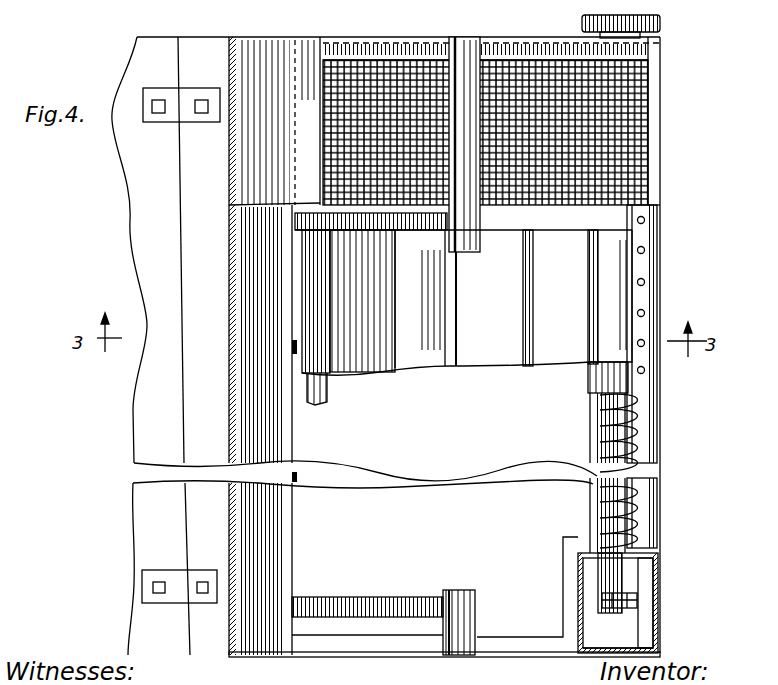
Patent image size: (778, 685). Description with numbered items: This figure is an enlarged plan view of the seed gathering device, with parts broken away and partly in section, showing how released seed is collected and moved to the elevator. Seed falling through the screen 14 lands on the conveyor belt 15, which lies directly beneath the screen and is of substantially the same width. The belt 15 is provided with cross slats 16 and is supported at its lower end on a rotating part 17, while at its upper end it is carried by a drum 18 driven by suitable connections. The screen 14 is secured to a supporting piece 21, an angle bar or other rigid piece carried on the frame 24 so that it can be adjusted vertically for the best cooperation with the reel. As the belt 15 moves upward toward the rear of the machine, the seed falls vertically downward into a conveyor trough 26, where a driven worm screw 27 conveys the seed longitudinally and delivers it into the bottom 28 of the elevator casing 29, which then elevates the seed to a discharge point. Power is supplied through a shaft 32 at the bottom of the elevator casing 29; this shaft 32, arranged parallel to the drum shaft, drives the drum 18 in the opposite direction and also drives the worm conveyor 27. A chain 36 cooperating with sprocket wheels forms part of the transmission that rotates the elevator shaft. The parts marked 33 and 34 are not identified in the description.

The screen 14 is at (323, 127).
The conveyor belt 15 is at (485, 352).
The cross slats 16 is at (381, 293).
The rotating part 17 is at (323, 392).
The drum 18 is at (593, 387).
The supporting piece 21 is at (472, 251).
The frame 24 is at (503, 648).
The conveyor trough 26 is at (648, 290).
The worm screw 27 is at (600, 497).
The bottom of the elevator casing 28 is at (637, 635).
The elevator casing 29 is at (578, 578).
The shaft 32 is at (622, 570).
The knob 33 is at (662, 22).
The stem 34 is at (583, 23).
The chain 36 is at (637, 597).